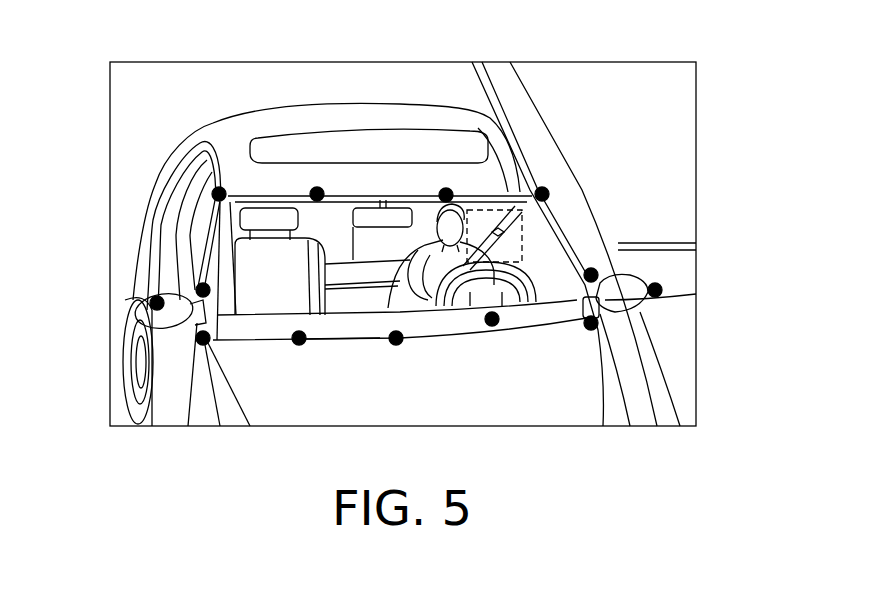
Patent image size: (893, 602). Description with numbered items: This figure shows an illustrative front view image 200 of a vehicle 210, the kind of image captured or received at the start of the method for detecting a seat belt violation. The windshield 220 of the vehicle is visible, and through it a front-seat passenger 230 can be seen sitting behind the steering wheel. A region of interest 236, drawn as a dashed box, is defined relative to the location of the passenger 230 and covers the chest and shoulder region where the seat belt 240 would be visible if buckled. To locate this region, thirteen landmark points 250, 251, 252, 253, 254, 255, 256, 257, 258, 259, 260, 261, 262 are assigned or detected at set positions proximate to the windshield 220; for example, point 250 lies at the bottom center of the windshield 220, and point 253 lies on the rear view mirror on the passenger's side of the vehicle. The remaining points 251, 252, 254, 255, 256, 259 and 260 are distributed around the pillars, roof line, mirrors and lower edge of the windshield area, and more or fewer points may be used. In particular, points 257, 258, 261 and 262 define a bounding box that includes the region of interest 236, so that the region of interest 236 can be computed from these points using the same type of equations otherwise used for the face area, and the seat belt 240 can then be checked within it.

The image 200 is at (521, 52).
The vehicle 210 is at (460, 412).
The windshield 220 is at (363, 340).
The front-seat passenger 230 is at (405, 200).
The region of interest 236 is at (522, 213).
The seat belt 240 is at (497, 226).
The landmark point 250 is at (397, 345).
The landmark point 251 is at (300, 345).
The landmark point 252 is at (206, 343).
The landmark point 253 is at (150, 304).
The landmark point 254 is at (196, 289).
The landmark point 255 is at (212, 193).
The landmark point 256 is at (317, 188).
The landmark point 257 is at (446, 187).
The landmark point 258 is at (548, 191).
The landmark point 259 is at (596, 270).
The landmark point 260 is at (662, 290).
The landmark point 261 is at (597, 328).
The landmark point 262 is at (492, 327).